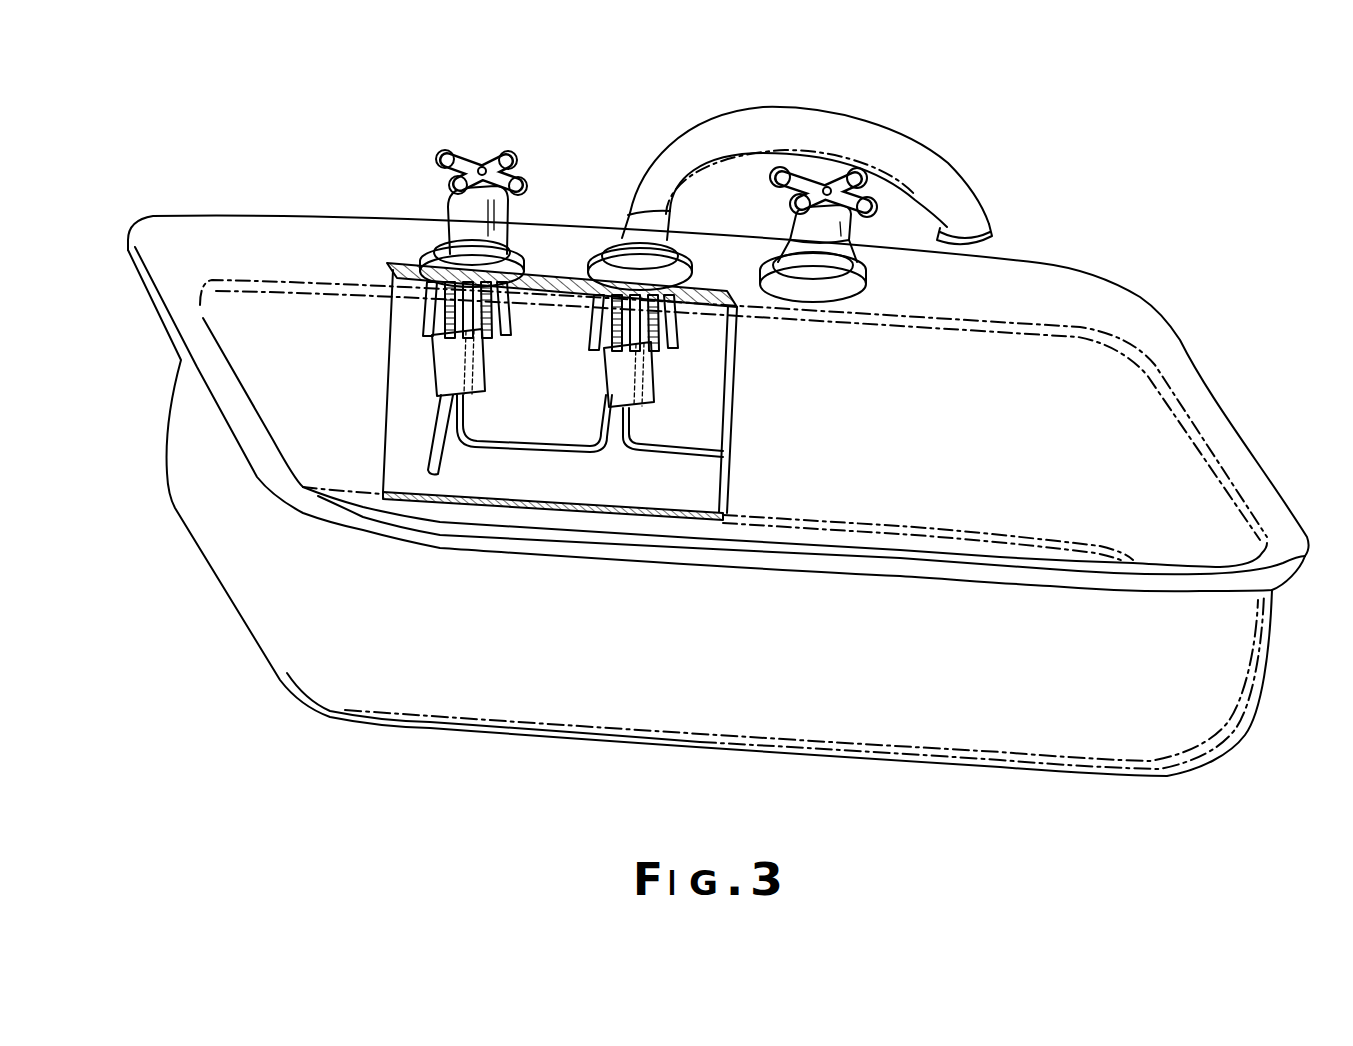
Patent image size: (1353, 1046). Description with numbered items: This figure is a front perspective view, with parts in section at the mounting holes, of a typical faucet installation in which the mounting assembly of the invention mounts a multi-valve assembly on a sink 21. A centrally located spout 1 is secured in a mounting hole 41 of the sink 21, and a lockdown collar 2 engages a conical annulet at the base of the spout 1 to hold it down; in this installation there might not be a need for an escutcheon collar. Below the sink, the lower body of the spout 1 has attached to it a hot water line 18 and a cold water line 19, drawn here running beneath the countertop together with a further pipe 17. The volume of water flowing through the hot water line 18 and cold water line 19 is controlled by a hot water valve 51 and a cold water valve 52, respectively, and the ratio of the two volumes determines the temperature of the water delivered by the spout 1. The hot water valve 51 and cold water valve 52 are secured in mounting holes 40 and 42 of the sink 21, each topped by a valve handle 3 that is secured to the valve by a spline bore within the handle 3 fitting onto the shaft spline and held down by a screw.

The spout 1 is at (913, 150).
The lockdown collar 2 is at (570, 248).
The valve handle 3 is at (459, 145).
The pipe 17 is at (428, 446).
The hot water line 18 is at (551, 444).
The cold water line 19 is at (690, 451).
The sink 21 is at (268, 226).
The mounting hole 40 is at (412, 322).
The mounting hole 41 is at (585, 292).
The mounting hole 42 is at (872, 300).
The hot water valve 51 is at (410, 186).
The cold water valve 52 is at (756, 204).